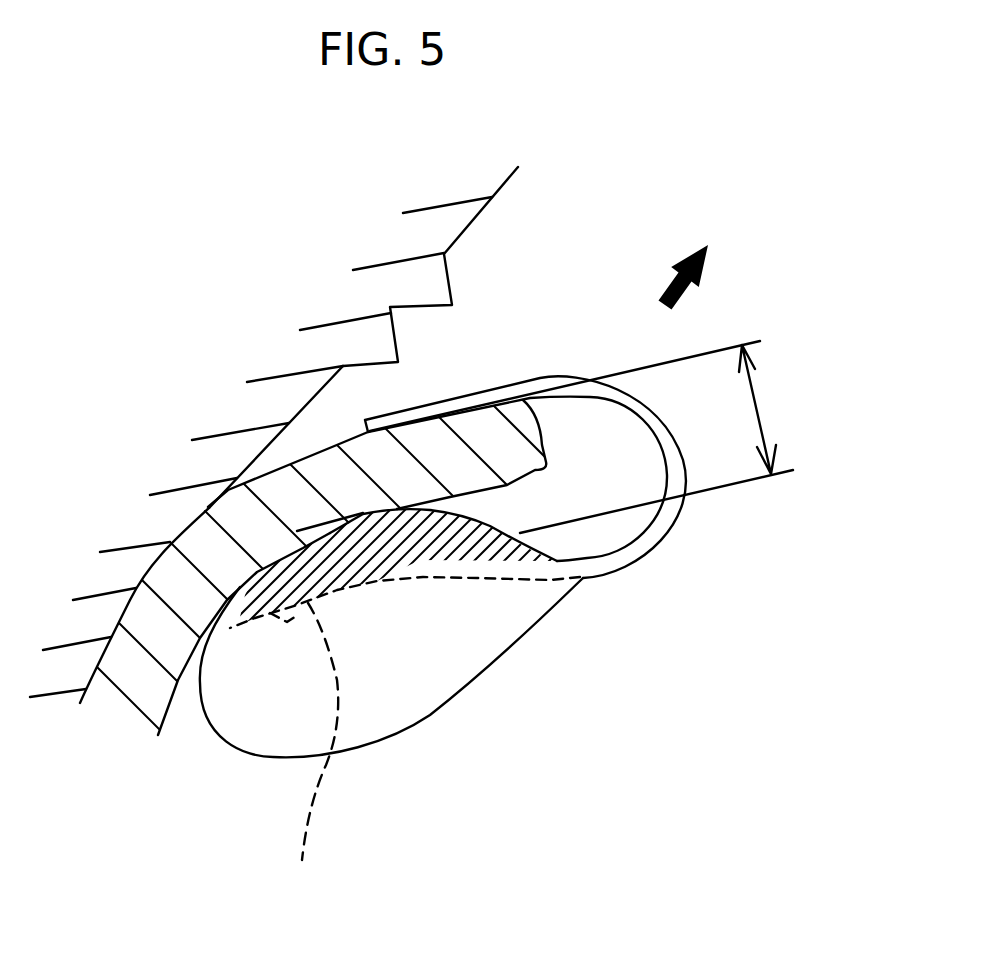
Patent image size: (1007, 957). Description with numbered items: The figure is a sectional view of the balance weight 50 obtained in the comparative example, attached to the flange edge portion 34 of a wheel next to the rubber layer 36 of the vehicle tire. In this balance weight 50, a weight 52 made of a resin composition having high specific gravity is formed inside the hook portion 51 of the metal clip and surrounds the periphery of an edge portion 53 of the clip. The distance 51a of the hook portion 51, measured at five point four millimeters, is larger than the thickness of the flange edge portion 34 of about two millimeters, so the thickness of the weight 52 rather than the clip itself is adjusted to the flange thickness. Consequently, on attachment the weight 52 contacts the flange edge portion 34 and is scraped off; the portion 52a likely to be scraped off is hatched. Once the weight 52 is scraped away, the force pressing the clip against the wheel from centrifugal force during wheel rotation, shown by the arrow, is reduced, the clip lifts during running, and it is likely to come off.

The flange edge portion 34 is at (165, 702).
The rubber layer 36 is at (435, 225).
The balance weight 50 is at (627, 608).
The hook portion 51 is at (660, 523).
The distance of hook portion 51a is at (758, 410).
The weight 52 is at (397, 705).
The portion likely to be scraped off 52a is at (368, 557).
The edge portion 53 is at (323, 758).